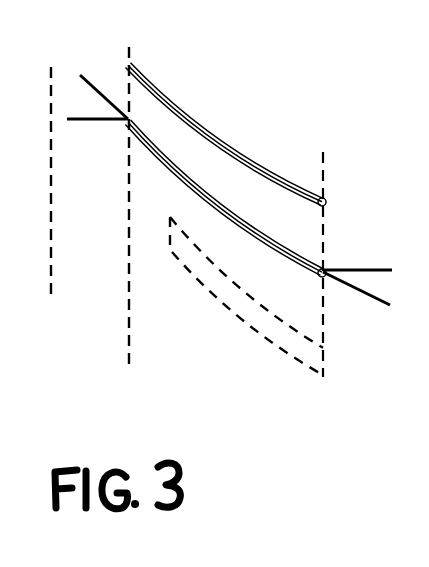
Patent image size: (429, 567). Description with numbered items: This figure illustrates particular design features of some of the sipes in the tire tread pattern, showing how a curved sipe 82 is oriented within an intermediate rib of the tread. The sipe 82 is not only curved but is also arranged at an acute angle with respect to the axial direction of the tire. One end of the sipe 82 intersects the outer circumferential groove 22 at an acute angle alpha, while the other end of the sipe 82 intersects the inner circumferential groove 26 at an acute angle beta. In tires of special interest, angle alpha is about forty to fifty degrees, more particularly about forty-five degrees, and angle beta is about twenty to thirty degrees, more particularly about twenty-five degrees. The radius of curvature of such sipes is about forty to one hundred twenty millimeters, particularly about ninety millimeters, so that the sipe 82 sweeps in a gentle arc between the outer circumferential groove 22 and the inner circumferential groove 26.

The outer circumferential groove 22 is at (95, 50).
The inner circumferential groove 26 is at (373, 163).
The sipe 82 is at (252, 159).